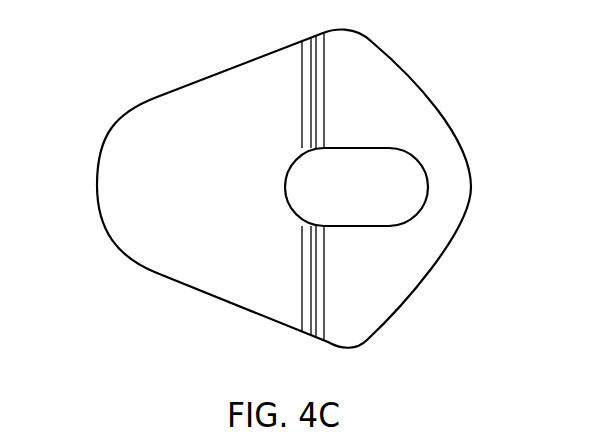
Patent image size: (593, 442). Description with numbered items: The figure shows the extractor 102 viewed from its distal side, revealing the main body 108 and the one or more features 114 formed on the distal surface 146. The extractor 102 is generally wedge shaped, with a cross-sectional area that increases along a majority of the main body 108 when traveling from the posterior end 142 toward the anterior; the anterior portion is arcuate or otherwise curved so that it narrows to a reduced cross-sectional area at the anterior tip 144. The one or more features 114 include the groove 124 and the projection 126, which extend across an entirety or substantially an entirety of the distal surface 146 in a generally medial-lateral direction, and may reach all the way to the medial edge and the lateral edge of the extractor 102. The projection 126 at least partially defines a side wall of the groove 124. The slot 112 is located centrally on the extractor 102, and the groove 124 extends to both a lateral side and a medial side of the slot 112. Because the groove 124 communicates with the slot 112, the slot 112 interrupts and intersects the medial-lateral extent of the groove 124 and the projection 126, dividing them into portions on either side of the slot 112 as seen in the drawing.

The extractor 102 is at (191, 54).
The main body 108 is at (384, 85).
The slot 112 is at (418, 160).
The one or more features 114 is at (299, 302).
The groove 124 is at (301, 101).
The projection 126 is at (326, 260).
The posterior end 142 is at (97, 186).
The anterior tip 144 is at (472, 186).
The distal surface 146 is at (183, 252).